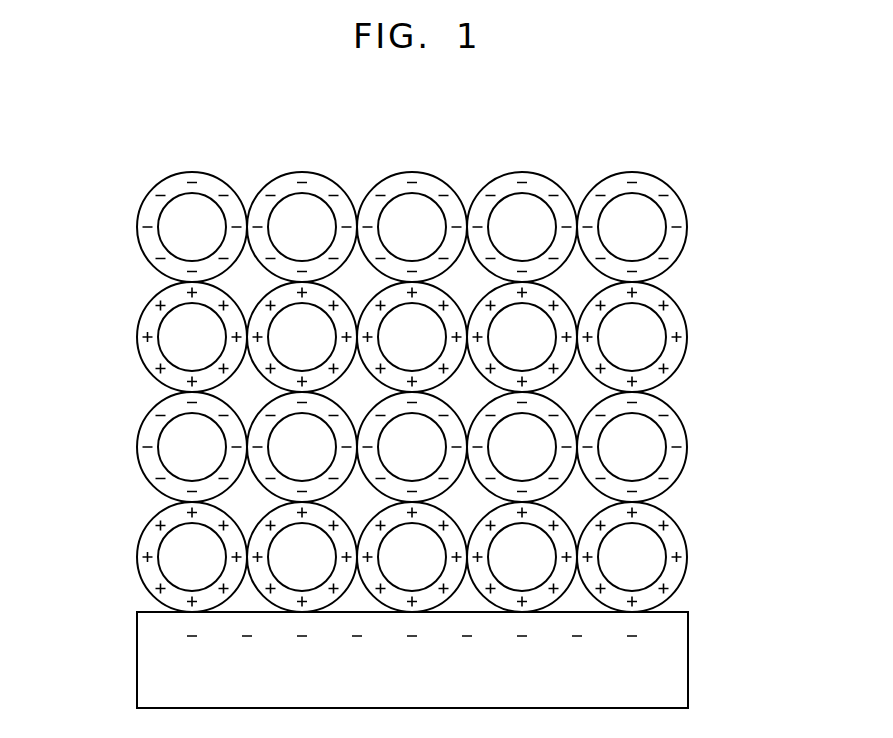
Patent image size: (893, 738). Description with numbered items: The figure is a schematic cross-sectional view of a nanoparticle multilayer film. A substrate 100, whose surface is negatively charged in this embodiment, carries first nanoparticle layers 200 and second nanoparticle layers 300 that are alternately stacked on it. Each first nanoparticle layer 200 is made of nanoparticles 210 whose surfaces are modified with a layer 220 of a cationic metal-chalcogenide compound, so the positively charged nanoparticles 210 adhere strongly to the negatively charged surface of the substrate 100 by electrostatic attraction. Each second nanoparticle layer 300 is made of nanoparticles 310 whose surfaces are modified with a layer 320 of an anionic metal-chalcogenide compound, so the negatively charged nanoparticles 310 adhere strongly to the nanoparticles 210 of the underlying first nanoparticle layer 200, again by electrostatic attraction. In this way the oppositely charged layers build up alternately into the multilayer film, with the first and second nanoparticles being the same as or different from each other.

The substrate 100 is at (137, 658).
The first nanoparticle layer 200 is at (396, 447).
The nanoparticles 210 is at (652, 350).
The layer of a cationic metal-chalcogenide compound 220 is at (657, 296).
The second nanoparticle layer 300 is at (396, 337).
The nanoparticles 310 is at (652, 240).
The layer of an anionic metal-chalcogenide compound 320 is at (657, 188).